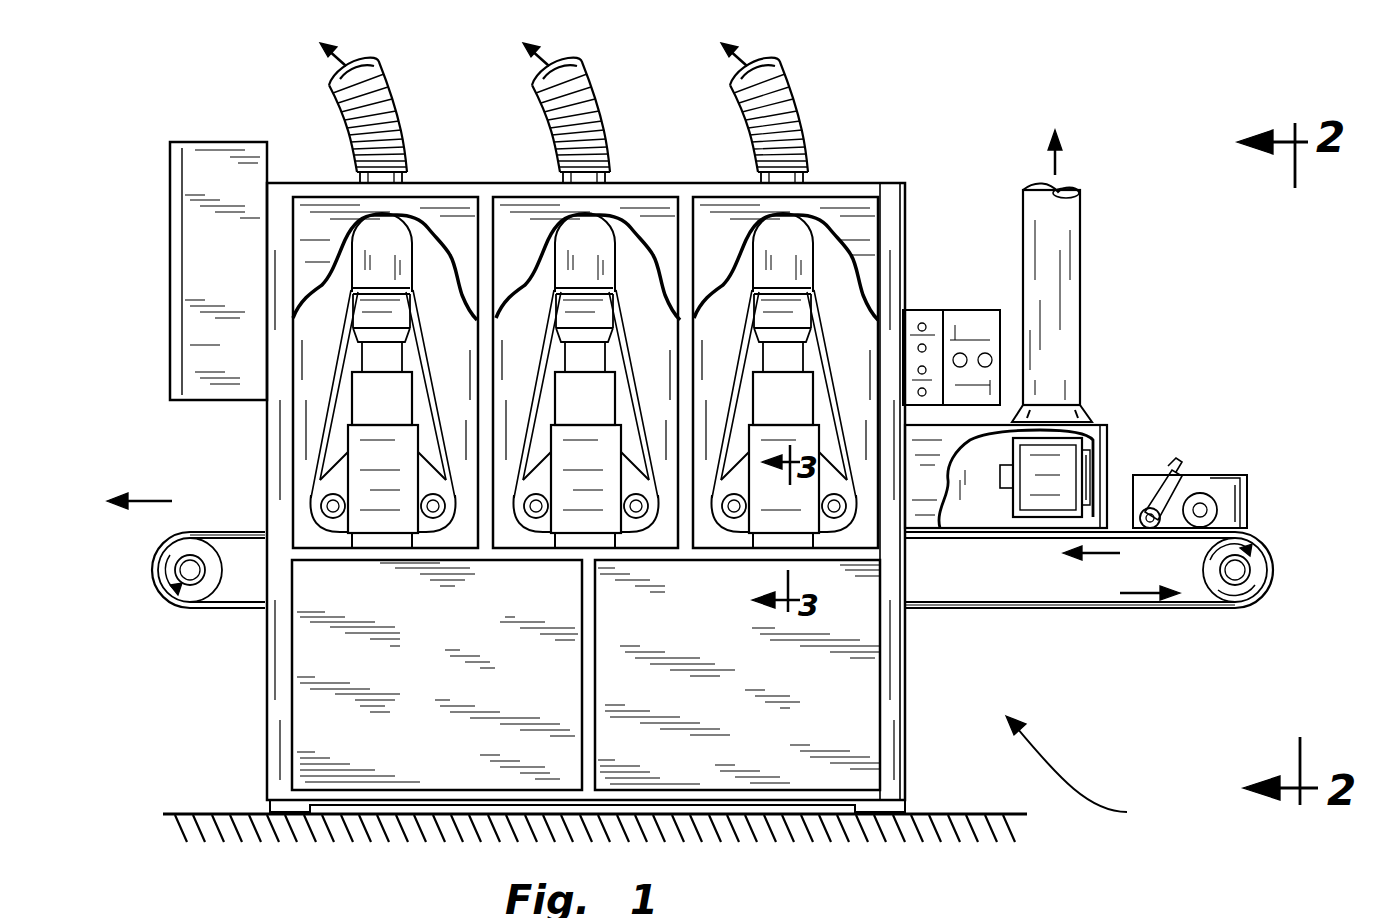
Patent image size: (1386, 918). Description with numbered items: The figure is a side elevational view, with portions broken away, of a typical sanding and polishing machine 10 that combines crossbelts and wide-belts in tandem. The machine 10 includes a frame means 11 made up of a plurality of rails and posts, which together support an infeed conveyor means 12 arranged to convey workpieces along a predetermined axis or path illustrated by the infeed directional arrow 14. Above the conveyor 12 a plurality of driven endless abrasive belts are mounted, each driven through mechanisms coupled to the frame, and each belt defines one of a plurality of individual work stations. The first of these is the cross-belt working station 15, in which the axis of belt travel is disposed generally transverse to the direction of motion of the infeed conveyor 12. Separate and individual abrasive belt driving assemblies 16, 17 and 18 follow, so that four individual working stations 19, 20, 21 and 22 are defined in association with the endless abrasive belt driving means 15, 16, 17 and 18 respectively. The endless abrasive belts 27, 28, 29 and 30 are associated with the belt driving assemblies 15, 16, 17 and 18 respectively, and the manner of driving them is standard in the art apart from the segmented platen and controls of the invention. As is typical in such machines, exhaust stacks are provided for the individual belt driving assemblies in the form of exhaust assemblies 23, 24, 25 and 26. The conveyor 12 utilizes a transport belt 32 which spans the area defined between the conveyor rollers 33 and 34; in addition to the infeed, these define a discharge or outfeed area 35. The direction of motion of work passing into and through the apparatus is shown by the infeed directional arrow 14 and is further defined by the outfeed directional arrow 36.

The sanding and polishing machine 10 is at (1083, 772).
The frame means 11 is at (878, 703).
The infeed conveyor means 12 is at (1168, 579).
The infeed directional arrow 14 is at (1305, 502).
The cross-belt working station 15 is at (1071, 373).
The abrasive belt driving assembly 16 is at (784, 373).
The abrasive belt driving assembly 17 is at (586, 373).
The abrasive belt driving assembly 18 is at (402, 412).
The working station 19 is at (1007, 540).
The working station 20 is at (747, 565).
The working station 21 is at (560, 565).
The working station 22 is at (378, 549).
The exhaust assembly 23 is at (1085, 222).
The exhaust assembly 24 is at (778, 113).
The exhaust assembly 25 is at (584, 113).
The exhaust assembly 26 is at (398, 110).
The endless abrasive belt 27 is at (1010, 448).
The endless abrasive belt 28 is at (788, 411).
The endless abrasive belt 29 is at (589, 411).
The endless abrasive belt 30 is at (432, 380).
The transport belt 32 is at (1010, 612).
The conveyor roller 33 is at (1220, 590).
The conveyor roller 34 is at (190, 593).
The discharge or outfeed area 35 is at (236, 530).
The outfeed directional arrow 36 is at (150, 500).